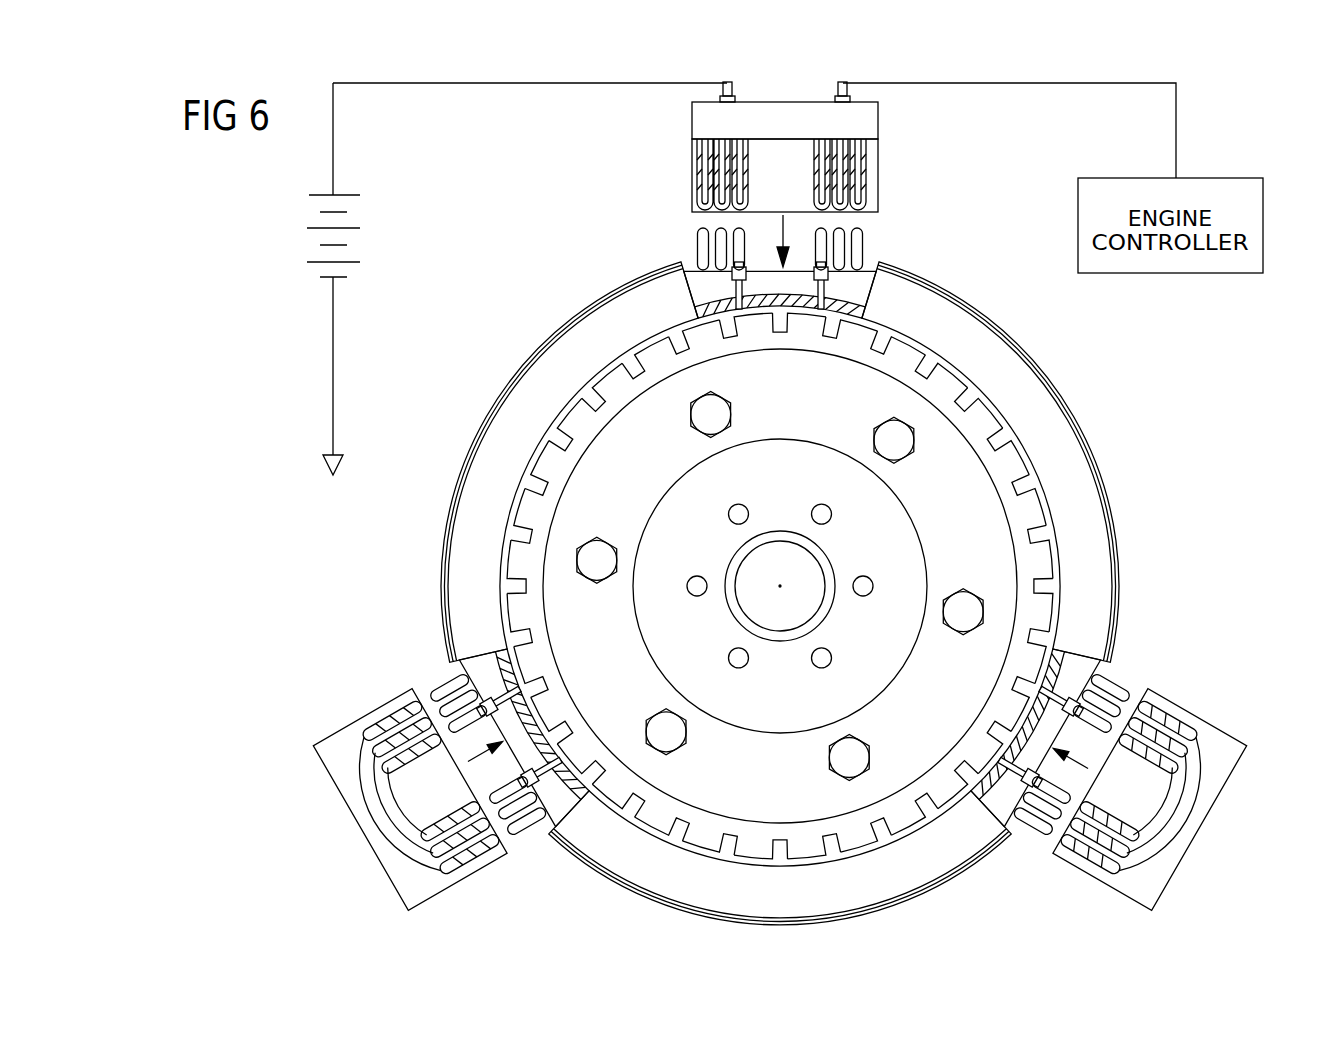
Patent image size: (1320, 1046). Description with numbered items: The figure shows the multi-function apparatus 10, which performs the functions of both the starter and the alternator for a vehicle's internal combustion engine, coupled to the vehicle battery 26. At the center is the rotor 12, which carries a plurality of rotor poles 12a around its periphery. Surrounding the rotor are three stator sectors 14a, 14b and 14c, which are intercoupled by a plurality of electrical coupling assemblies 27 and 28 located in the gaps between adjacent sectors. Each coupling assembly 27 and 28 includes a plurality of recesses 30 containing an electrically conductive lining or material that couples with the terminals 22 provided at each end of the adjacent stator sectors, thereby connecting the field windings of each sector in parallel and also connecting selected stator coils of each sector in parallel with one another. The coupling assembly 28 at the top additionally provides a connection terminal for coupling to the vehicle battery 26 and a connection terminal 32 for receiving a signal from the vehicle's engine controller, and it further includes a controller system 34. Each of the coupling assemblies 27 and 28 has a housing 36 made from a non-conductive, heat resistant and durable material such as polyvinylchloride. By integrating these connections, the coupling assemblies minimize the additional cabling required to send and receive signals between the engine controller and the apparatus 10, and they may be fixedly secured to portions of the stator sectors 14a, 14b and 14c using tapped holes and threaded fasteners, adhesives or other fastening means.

The multi-function apparatus 10 is at (747, 566).
The rotor 12 is at (725, 613).
The rotor poles 12a is at (512, 566).
The stator sector 14a is at (488, 404).
The stator sector 14b is at (1100, 427).
The stator sector 14c is at (945, 901).
The terminals 22 is at (700, 240).
The vehicle battery 26 is at (358, 196).
The electrical coupling assembly 27 is at (783, 786).
The electrical coupling assembly 28 is at (680, 183).
The recesses 30 is at (722, 90).
The connection terminal 32 is at (850, 88).
The controller system 34 is at (878, 125).
The housing 36 is at (385, 855).